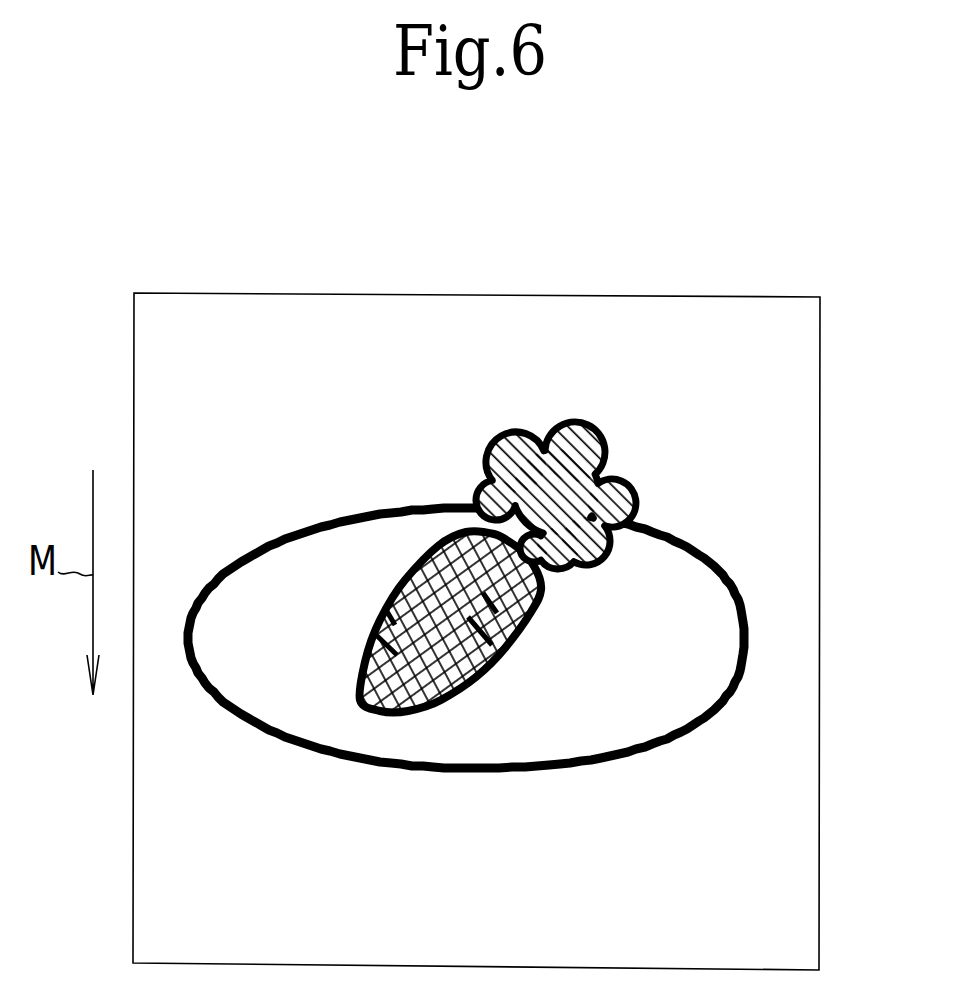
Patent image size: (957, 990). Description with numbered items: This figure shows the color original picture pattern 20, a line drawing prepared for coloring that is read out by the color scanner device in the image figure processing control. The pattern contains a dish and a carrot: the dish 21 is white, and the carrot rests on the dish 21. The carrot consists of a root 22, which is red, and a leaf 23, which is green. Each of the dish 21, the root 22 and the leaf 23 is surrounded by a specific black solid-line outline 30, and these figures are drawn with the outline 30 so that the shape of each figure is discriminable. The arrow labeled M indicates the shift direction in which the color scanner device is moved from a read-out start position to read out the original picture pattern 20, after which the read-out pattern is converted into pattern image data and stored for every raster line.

The color original picture pattern 20 is at (760, 488).
The dish 21 is at (495, 757).
The root 22 is at (397, 578).
The leaf 23 is at (597, 448).
The outline 30 is at (521, 653).